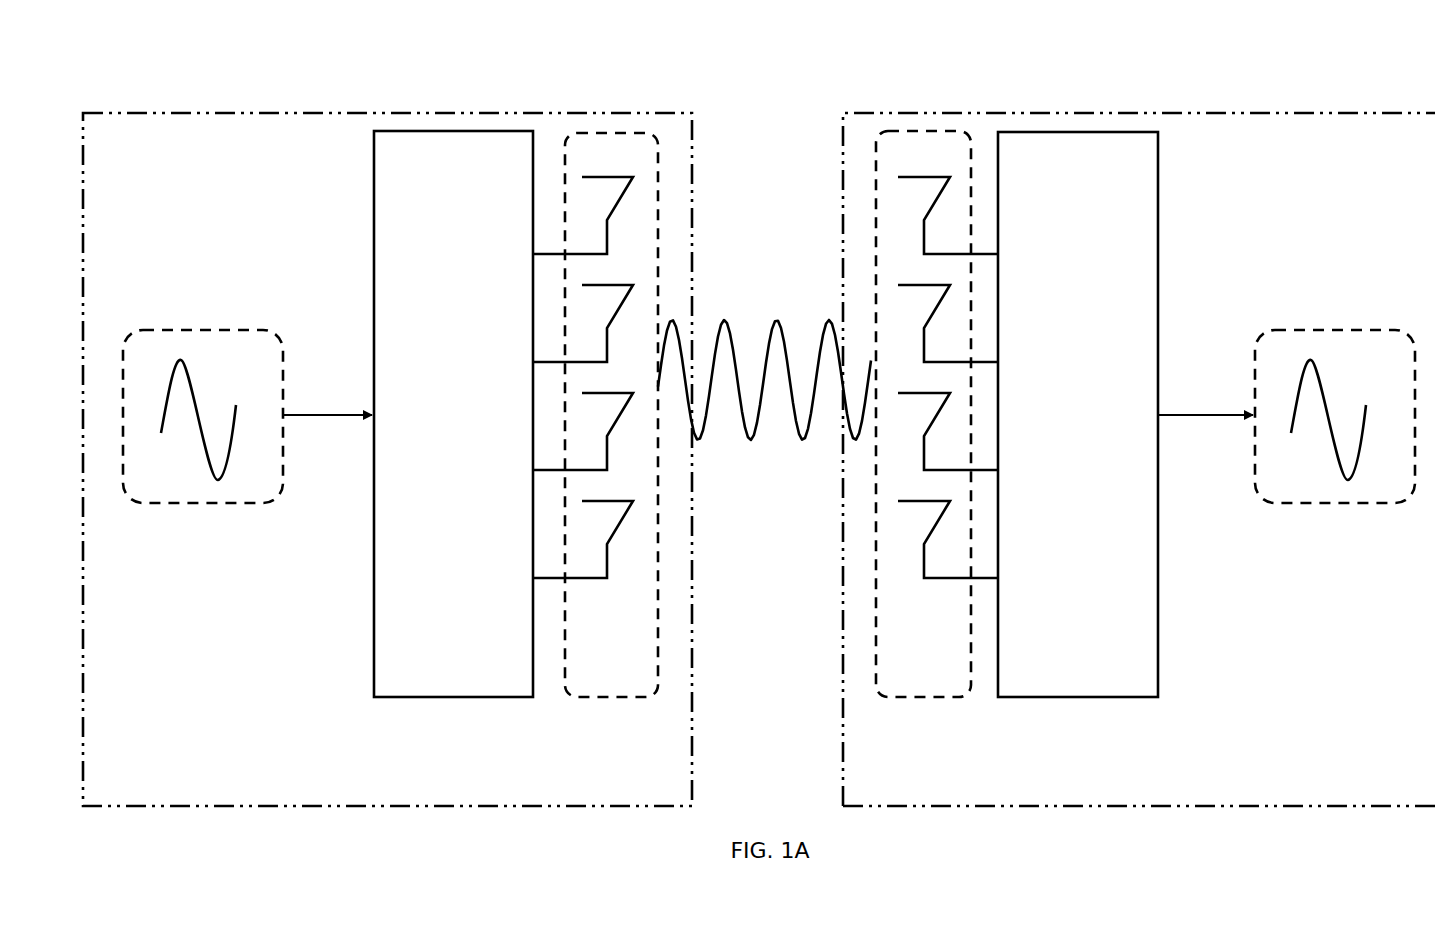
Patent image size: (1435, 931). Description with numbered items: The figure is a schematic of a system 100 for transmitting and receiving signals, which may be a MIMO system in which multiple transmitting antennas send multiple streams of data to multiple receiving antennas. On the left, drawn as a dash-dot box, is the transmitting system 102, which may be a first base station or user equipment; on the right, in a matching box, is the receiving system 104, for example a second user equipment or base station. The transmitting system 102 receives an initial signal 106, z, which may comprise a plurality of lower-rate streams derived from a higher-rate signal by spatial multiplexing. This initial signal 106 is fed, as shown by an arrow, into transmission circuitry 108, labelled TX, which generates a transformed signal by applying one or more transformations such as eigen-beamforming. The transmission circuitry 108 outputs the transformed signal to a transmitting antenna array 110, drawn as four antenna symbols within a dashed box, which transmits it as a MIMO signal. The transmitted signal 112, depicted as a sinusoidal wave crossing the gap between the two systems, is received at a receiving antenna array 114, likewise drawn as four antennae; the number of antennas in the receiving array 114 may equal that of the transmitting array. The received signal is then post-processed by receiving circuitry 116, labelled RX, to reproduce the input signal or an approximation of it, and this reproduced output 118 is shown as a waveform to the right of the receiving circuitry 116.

The system 100 is at (779, 92).
The transmitting system 102 is at (340, 807).
The receiving system 104 is at (1090, 807).
The initial signal 106 is at (215, 505).
The transmission circuitry 108 is at (459, 697).
The transmitting antenna array 110 is at (620, 699).
The transmitted signal 112 is at (777, 318).
The receiving antenna array 114 is at (925, 699).
The receiving circuitry 116 is at (1084, 697).
The output signal 118 is at (1343, 505).